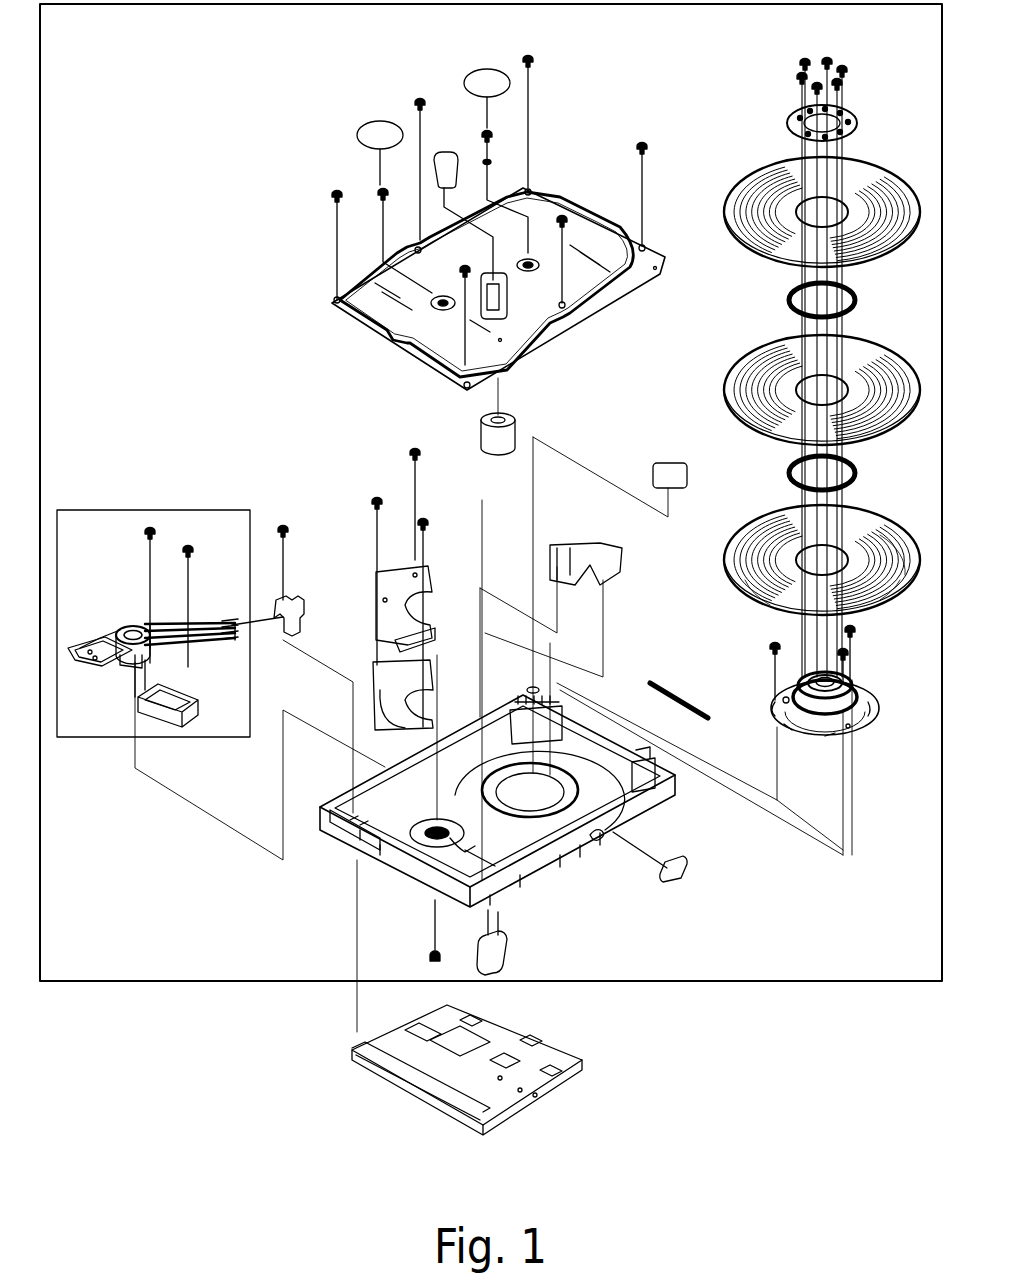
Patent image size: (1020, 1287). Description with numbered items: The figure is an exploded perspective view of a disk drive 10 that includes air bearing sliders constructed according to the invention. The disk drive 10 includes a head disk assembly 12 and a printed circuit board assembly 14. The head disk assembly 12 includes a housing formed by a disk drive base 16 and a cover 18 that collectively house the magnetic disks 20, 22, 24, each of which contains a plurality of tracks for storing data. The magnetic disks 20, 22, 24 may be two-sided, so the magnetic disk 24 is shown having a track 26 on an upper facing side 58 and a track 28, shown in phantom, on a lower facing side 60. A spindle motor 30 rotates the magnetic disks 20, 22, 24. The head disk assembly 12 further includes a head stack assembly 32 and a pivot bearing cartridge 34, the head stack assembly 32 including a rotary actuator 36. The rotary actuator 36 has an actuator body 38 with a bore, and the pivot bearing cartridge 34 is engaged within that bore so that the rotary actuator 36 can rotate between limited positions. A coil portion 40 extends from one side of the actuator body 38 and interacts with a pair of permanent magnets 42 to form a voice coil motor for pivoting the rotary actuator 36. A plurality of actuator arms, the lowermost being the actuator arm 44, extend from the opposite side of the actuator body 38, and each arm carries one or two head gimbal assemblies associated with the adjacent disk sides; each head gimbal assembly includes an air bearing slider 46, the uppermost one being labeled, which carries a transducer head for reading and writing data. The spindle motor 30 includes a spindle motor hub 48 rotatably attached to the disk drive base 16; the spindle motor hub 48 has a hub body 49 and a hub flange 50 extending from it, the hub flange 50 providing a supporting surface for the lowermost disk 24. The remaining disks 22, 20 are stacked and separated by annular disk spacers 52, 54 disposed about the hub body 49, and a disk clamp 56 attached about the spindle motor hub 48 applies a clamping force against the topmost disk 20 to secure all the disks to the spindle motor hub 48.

The disk drive 10 is at (491, 573).
The head disk assembly 12 is at (660, 982).
The printed circuit board assembly 14 is at (527, 1100).
The disk drive base 16 is at (555, 873).
The cover 18 is at (630, 296).
The magnetic disk 20 is at (753, 176).
The magnetic disk 22 is at (755, 354).
The magnetic disk 24 is at (755, 524).
The track 26 is at (897, 595).
The track 28 is at (758, 595).
The spindle motor 30 is at (808, 703).
The head stack assembly 32 is at (170, 601).
The pivot bearing cartridge 34 is at (146, 629).
The rotary actuator 36 is at (125, 624).
The actuator body 38 is at (118, 635).
The coil portion 40 is at (105, 670).
The permanent magnets 42 is at (376, 596).
The actuator arm 44 is at (180, 645).
The air bearing slider 46 is at (232, 615).
The spindle motor hub 48 is at (825, 735).
The hub body 49 is at (782, 709).
The hub flange 50 is at (878, 708).
The annular disk spacer 52 is at (790, 302).
The annular disk spacer 54 is at (790, 476).
The disk clamp 56 is at (795, 114).
The upper facing side 58 is at (897, 525).
The lower facing side 60 is at (813, 372).